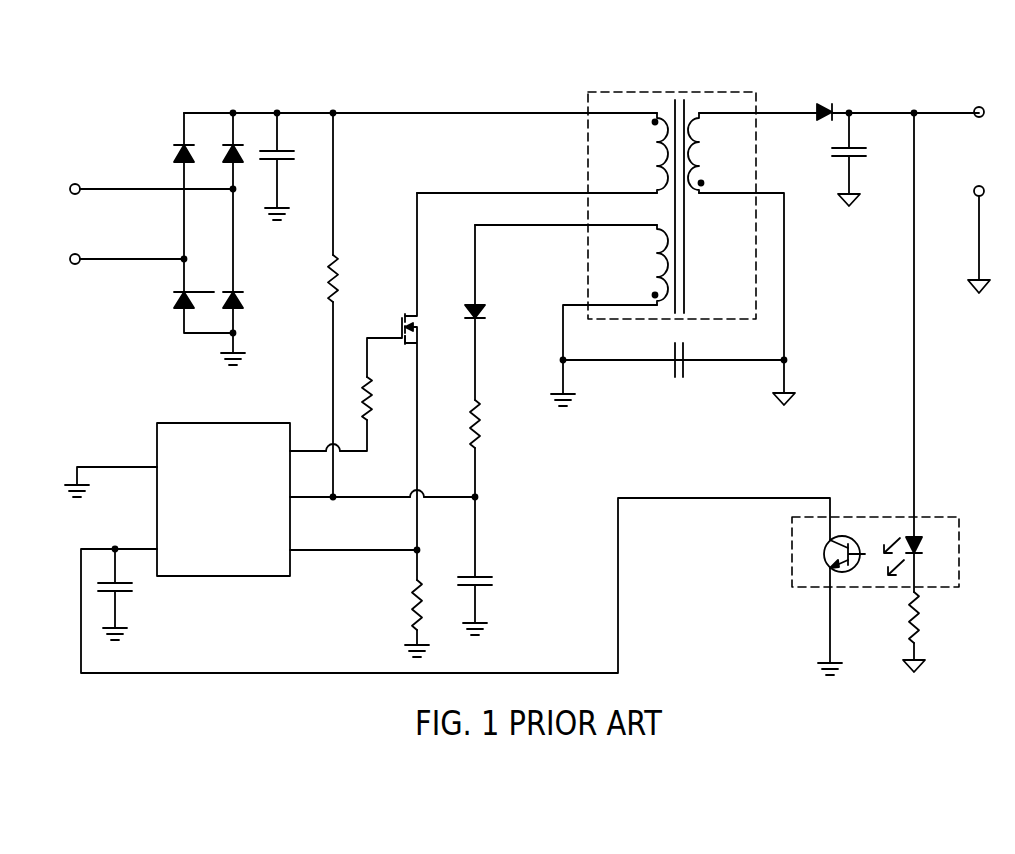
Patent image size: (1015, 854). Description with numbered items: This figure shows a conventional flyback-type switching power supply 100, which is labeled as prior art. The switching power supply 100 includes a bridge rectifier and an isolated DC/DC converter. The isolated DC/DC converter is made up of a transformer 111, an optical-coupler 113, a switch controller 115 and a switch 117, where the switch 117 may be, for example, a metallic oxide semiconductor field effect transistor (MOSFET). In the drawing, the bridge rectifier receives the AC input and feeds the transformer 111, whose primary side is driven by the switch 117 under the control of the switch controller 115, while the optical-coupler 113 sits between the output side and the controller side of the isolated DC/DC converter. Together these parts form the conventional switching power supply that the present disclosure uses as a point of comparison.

The flyback-type switching power supply 100 is at (150, 92).
The transformer 111 is at (713, 92).
The optical-coupler 113 is at (845, 517).
The switch controller 115 is at (222, 423).
The switch 117 is at (401, 320).